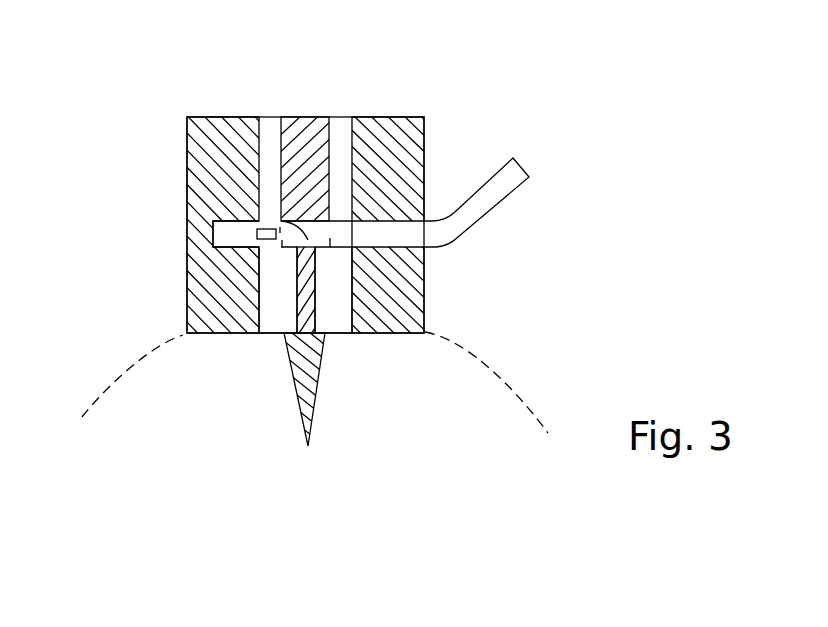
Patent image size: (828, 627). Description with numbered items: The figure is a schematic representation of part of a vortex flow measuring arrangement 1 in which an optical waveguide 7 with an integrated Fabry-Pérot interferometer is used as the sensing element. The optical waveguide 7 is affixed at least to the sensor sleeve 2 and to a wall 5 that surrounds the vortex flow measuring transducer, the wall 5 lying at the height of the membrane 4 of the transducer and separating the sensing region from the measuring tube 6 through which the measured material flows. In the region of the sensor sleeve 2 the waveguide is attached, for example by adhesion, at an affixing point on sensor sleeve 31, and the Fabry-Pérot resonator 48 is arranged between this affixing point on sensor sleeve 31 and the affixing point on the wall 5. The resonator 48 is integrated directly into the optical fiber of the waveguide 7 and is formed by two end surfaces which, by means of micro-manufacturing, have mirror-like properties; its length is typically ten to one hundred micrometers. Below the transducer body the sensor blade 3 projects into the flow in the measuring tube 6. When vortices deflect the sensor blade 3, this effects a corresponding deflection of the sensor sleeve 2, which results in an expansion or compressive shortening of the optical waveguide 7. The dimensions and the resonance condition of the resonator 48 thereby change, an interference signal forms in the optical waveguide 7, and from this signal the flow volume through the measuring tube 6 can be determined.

The measuring arrangement 1 is at (165, 88).
The sensor sleeve 2 is at (313, 148).
The sensor blade 3 is at (313, 393).
The membrane 4 is at (270, 335).
The wall 5 is at (403, 268).
The measuring tube 6 is at (121, 371).
The optical waveguide 7 is at (497, 192).
The affixing point on sensor sleeve 31 is at (282, 219).
The Fabry-Pérot resonator 48 is at (258, 231).